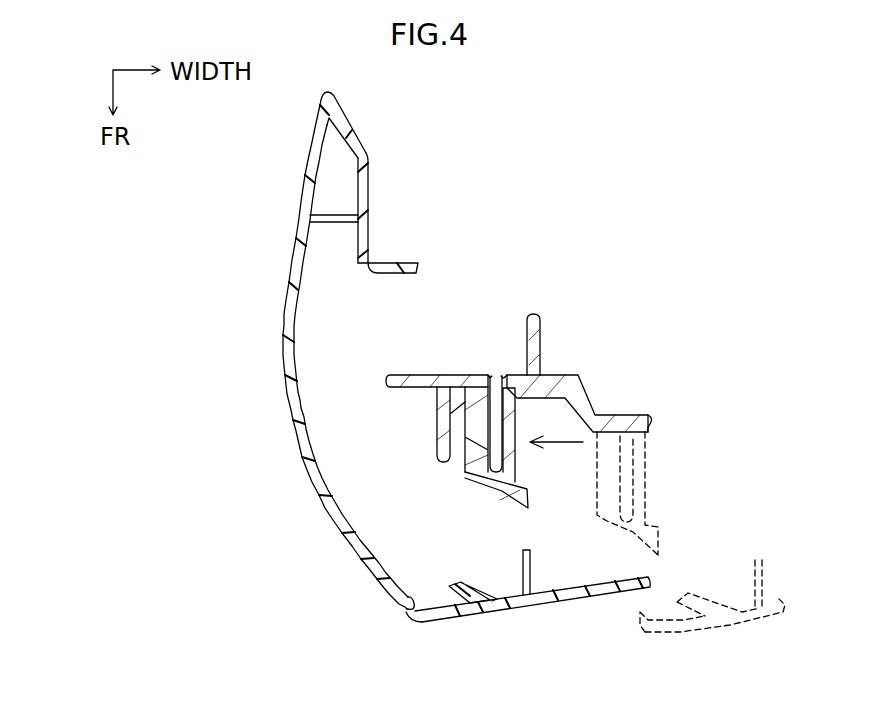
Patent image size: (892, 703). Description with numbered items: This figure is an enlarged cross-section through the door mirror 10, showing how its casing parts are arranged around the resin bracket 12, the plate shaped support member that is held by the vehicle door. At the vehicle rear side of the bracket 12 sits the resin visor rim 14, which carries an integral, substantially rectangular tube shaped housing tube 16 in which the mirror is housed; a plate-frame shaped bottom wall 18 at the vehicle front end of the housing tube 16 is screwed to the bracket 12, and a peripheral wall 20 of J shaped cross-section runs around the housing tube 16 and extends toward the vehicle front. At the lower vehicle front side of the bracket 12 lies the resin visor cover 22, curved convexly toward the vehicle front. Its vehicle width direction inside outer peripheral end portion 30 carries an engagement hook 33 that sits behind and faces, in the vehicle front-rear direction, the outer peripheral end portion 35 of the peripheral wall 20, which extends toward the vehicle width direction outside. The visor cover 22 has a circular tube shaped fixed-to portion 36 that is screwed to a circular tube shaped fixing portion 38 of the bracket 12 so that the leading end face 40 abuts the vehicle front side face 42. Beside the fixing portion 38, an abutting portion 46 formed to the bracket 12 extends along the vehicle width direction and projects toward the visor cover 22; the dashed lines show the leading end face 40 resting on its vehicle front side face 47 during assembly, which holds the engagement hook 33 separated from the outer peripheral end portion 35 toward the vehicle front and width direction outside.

The door mirror 10 is at (315, 552).
The bracket 12 is at (571, 364).
The visor rim 14 is at (279, 323).
The housing tube 16 is at (368, 196).
The bottom wall 18 is at (410, 260).
The peripheral wall 20 is at (352, 129).
The visor cover 22 is at (600, 596).
The outer peripheral end portion 30 is at (423, 617).
The engagement hook 33 is at (430, 600).
The outer peripheral end portion 35 is at (398, 610).
The fixed-to portion 36 is at (464, 437).
The fixing portion 38 is at (501, 390).
The leading end face 40 is at (488, 380).
The vehicle front side face 42 is at (493, 388).
The abutting portion 46 is at (636, 440).
The vehicle front side face 47 is at (622, 447).